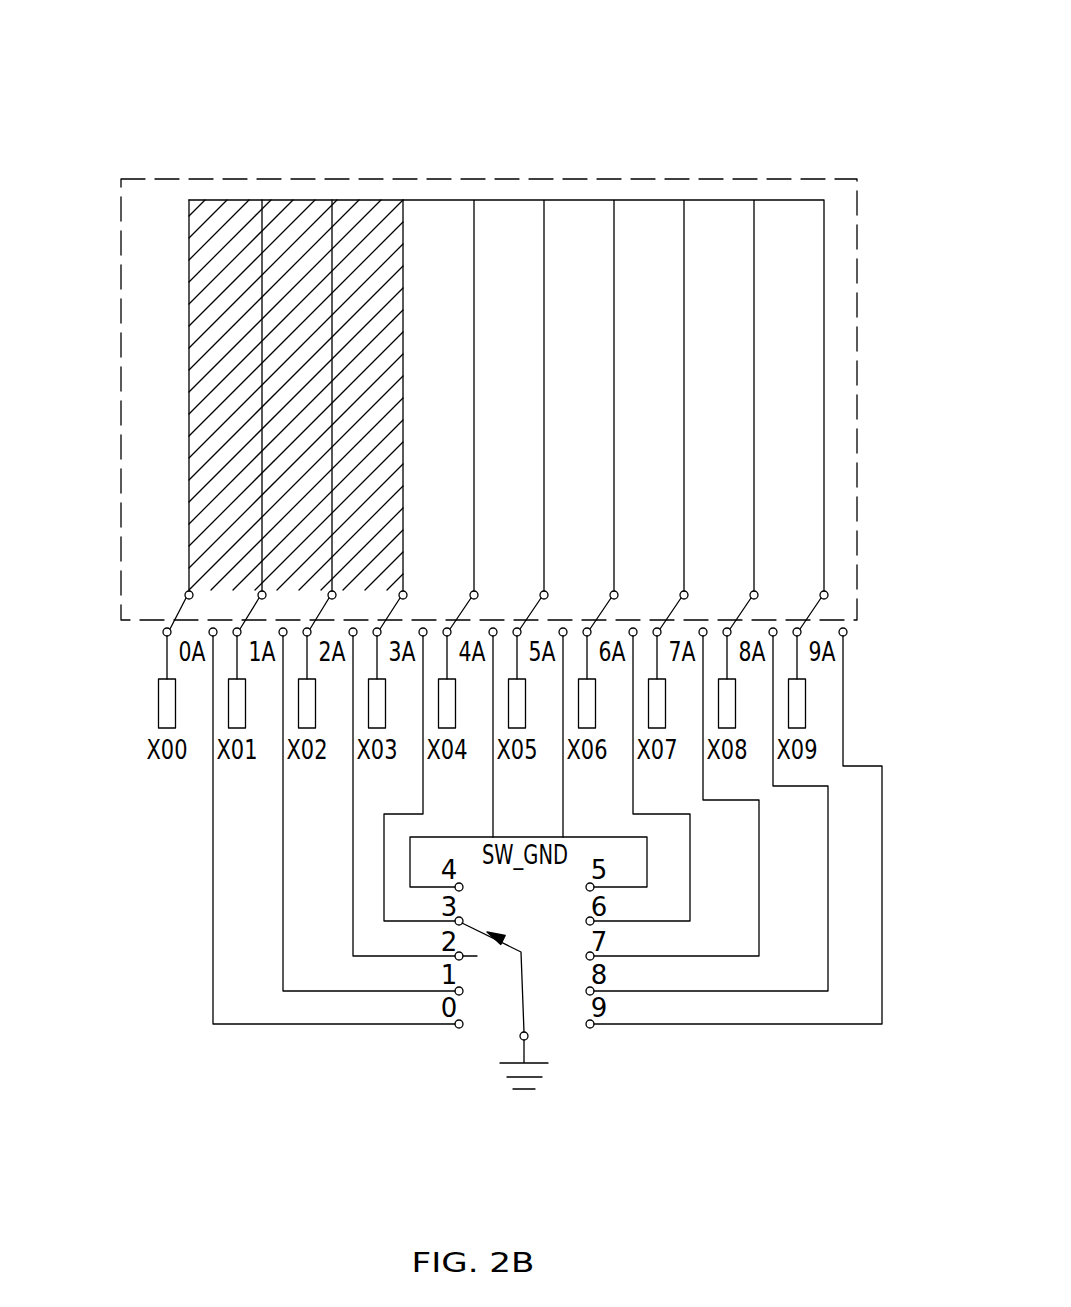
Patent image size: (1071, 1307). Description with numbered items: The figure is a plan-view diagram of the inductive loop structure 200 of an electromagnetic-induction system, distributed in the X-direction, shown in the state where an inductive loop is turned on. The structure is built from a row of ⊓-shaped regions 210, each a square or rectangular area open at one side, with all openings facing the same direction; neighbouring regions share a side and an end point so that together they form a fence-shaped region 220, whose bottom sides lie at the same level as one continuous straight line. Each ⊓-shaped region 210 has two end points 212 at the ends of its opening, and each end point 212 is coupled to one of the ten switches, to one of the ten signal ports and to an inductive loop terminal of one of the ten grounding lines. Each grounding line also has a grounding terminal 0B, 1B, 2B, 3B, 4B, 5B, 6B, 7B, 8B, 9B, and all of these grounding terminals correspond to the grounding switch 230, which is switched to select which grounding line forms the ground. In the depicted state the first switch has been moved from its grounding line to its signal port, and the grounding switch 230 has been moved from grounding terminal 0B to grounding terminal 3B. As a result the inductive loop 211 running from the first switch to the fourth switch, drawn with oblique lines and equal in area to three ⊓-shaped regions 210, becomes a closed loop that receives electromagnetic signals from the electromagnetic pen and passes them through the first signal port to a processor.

The inductive loop structure 200 is at (800, 77).
The ⊓-shaped region 210 is at (667, 247).
The inductive loop 211 is at (189, 188).
The end point 212 is at (258, 589).
The fence-shaped region 220 is at (467, 177).
The grounding switch 230 is at (519, 997).
The grounding terminal 0B is at (463, 1022).
The grounding terminal 1B is at (463, 989).
The grounding terminal 2B is at (455, 954).
The grounding terminal 3B is at (455, 920).
The grounding terminal 4B is at (462, 889).
The grounding terminal 5B is at (587, 889).
The grounding terminal 6B is at (587, 923).
The grounding terminal 7B is at (586, 957).
The grounding terminal 8B is at (586, 990).
The grounding terminal 9B is at (587, 1021).